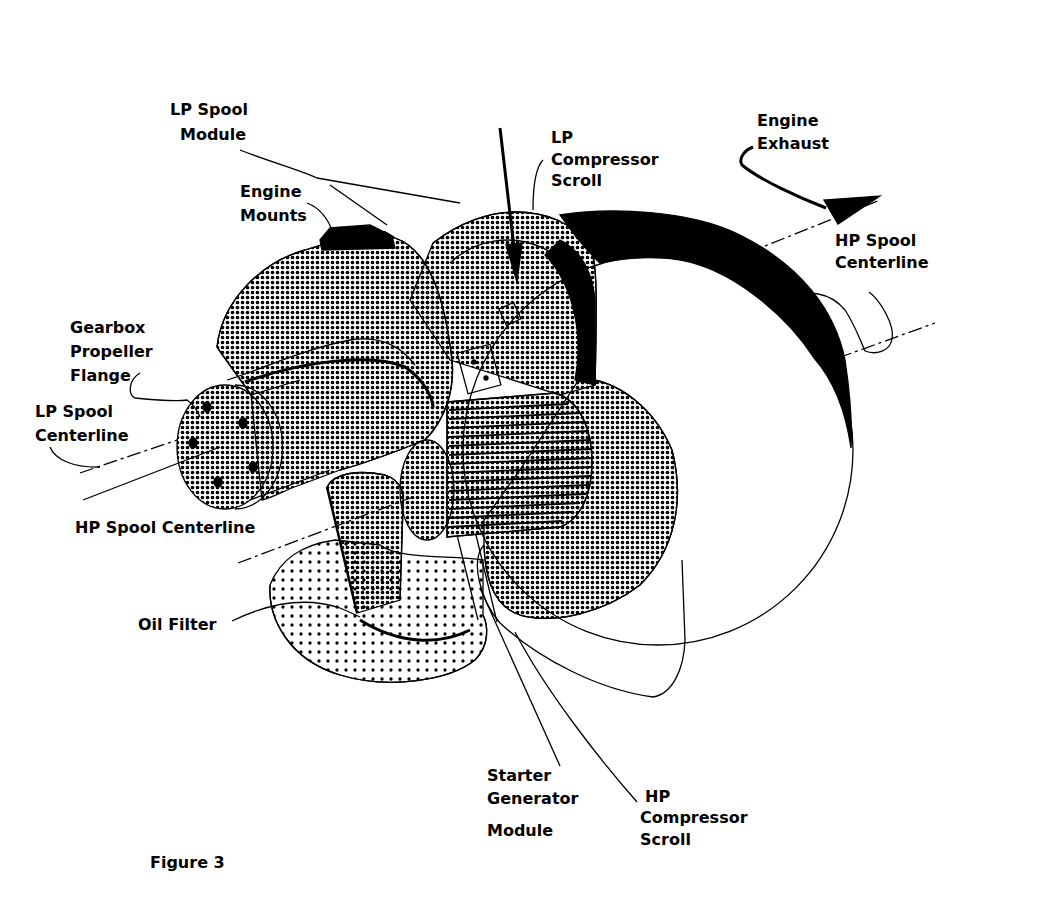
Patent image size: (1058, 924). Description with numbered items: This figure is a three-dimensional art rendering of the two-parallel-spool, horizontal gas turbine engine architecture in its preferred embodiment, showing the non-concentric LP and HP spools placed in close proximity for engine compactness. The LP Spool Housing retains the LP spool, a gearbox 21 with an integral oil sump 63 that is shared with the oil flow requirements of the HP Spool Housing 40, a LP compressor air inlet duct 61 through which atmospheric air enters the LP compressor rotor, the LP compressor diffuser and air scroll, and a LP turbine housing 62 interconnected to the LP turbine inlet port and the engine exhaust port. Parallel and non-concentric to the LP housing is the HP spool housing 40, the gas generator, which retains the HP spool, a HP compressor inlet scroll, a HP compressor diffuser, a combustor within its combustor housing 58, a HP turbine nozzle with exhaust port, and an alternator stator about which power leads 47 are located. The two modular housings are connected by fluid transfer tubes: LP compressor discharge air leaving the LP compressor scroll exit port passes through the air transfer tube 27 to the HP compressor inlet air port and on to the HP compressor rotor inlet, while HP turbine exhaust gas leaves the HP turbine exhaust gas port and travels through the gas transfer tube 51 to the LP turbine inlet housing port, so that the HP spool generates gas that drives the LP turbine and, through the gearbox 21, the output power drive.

The gearbox 21 is at (287, 277).
The LP compressor air inlet duct 61 is at (500, 160).
The LP turbine housing 62 is at (707, 228).
The gas transfer tube 51 is at (787, 300).
The oil sump 63 is at (413, 545).
The power leads 47 is at (365, 570).
The air transfer tube 27 is at (513, 600).
The HP spool housing 40 is at (680, 720).
The combustor housing 58 is at (772, 553).